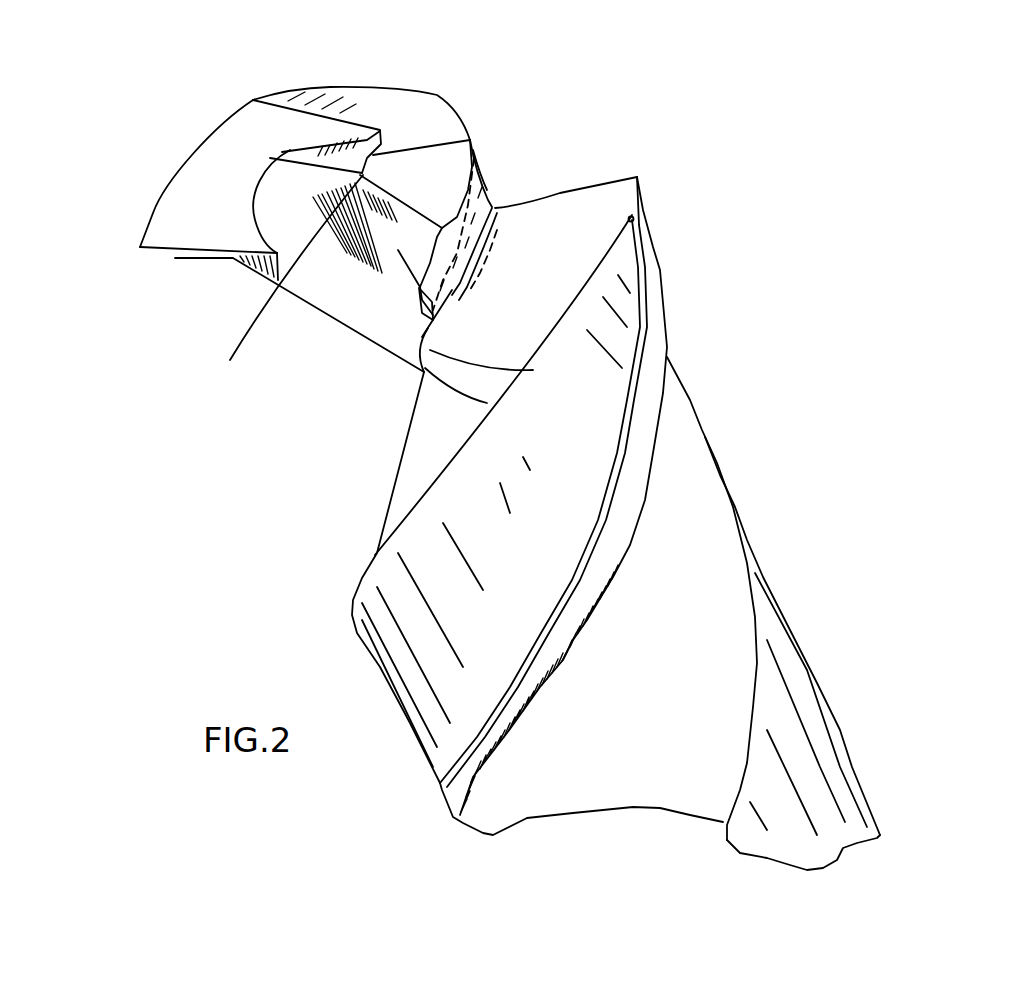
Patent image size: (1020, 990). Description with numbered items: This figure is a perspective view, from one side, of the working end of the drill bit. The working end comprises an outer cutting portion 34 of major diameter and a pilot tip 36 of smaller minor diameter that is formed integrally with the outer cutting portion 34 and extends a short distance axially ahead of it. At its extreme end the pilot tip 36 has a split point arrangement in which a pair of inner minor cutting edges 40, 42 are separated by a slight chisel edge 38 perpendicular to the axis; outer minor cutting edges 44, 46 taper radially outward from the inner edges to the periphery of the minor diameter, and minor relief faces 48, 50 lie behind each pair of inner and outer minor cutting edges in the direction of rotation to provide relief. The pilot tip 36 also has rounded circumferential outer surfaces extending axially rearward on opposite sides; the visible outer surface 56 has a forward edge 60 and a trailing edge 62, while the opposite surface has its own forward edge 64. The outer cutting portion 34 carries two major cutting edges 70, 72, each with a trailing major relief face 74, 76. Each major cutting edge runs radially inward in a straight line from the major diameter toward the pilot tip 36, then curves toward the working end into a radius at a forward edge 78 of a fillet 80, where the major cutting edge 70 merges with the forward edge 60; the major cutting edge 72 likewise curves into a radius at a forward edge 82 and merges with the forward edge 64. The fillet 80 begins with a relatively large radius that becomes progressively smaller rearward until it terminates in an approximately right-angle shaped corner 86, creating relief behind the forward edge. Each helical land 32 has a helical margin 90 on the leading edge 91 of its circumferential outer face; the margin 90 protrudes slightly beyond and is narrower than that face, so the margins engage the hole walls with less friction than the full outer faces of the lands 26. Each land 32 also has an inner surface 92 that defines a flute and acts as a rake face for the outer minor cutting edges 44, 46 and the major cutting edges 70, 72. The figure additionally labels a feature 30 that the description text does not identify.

The lands 26 is at (790, 569).
The body 30 is at (687, 507).
The helical land 32 is at (620, 330).
The outer cutting portion 34 is at (110, 221).
The pilot tip 36 is at (295, 133).
The chisel edge 38 is at (207, 182).
The inner minor cutting edge 40 is at (398, 139).
The inner minor cutting edge 42 is at (357, 255).
The outer minor cutting edge 44 is at (455, 155).
The outer minor cutting edge 46 is at (300, 291).
The minor relief face 48 is at (480, 170).
The minor relief face 50 is at (212, 252).
The rounded circumferential outer surface 56 is at (513, 207).
The forward edge 60 is at (490, 205).
The trailing edge 62 is at (420, 287).
The forward edge 64 is at (283, 200).
The major cutting edge 70 is at (607, 185).
The major cutting edge 72 is at (185, 250).
The major relief face 74 is at (588, 238).
The major relief face 76 is at (207, 181).
The forward edge 78 is at (603, 183).
The fillet 80 is at (467, 265).
The forward edge 82 is at (233, 253).
The corner 86 is at (487, 403).
The helical margin 90 is at (653, 383).
The leading edge 91 is at (660, 437).
The land inner surface 92 is at (337, 305).